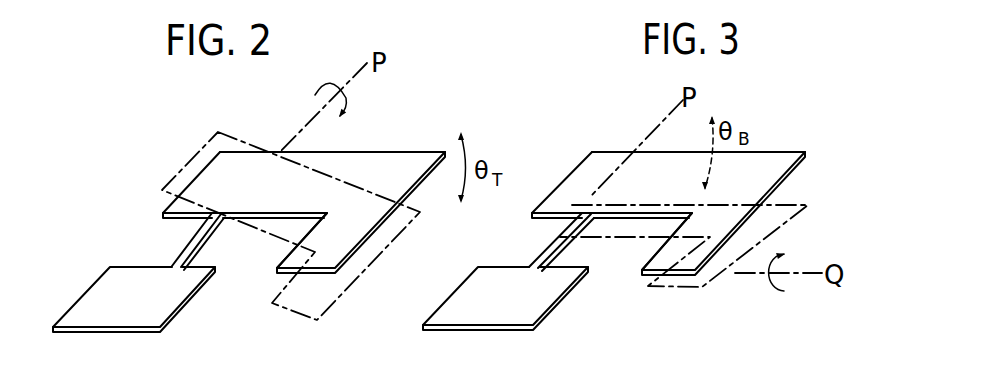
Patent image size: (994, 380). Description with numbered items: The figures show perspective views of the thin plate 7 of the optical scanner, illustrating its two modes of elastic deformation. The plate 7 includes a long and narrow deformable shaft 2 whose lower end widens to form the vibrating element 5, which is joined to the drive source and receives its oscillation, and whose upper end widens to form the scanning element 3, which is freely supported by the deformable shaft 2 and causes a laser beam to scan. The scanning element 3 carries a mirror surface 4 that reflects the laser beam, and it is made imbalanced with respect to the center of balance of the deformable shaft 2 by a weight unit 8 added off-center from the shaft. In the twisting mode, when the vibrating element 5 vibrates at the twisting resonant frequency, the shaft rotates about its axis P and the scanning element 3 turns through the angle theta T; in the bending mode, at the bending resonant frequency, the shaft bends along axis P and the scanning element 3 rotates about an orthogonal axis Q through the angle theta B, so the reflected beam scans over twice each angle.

In FIG. 2, the deformable shaft 2 is at (173, 252).
In FIG. 3, the deformable shaft 2 is at (532, 262).
In FIG. 2, the scanning element 3 is at (382, 167).
In FIG. 3, the scanning element 3 is at (755, 160).
In FIG. 2, the mirror surface 4 is at (264, 170).
In FIG. 3, the mirror surface 4 is at (628, 173).
In FIG. 2, the vibrating element 5 is at (86, 300).
In FIG. 3, the vibrating element 5 is at (545, 303).
In FIG. 2, the thin plate 7 is at (157, 191).
In FIG. 3, the thin plate 7 is at (656, 304).
In FIG. 2, the weight unit 8 is at (282, 231).
In FIG. 3, the weight unit 8 is at (697, 247).